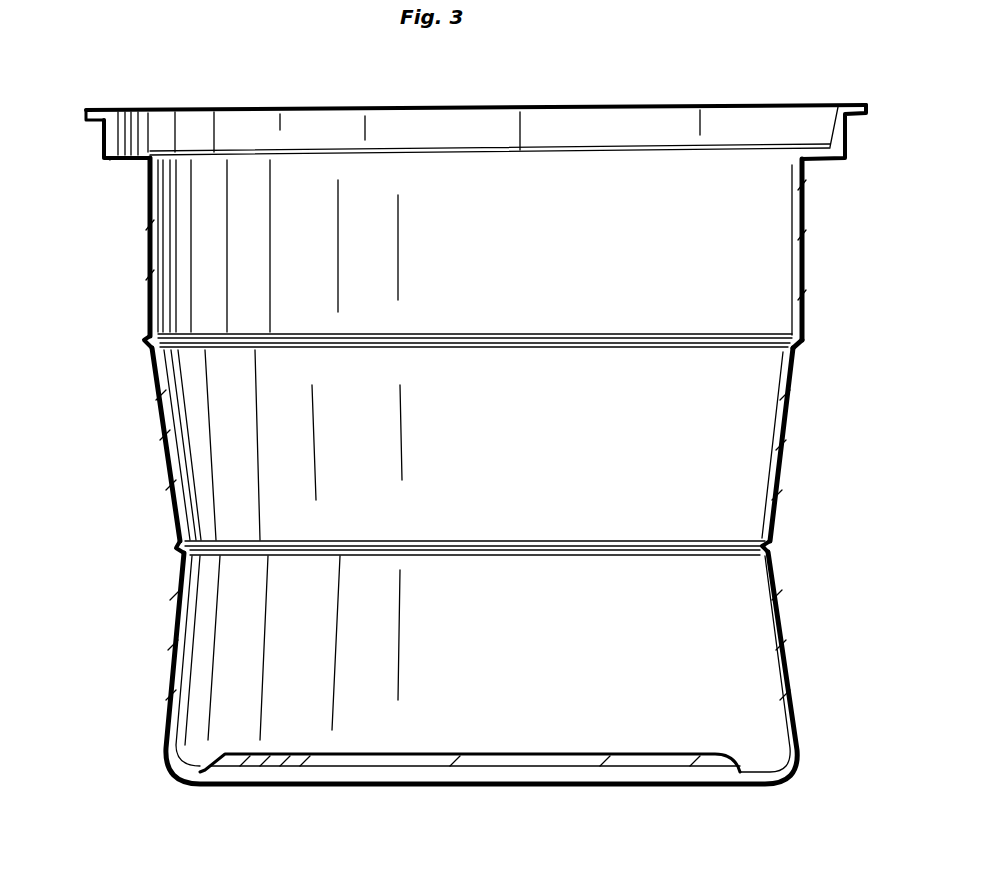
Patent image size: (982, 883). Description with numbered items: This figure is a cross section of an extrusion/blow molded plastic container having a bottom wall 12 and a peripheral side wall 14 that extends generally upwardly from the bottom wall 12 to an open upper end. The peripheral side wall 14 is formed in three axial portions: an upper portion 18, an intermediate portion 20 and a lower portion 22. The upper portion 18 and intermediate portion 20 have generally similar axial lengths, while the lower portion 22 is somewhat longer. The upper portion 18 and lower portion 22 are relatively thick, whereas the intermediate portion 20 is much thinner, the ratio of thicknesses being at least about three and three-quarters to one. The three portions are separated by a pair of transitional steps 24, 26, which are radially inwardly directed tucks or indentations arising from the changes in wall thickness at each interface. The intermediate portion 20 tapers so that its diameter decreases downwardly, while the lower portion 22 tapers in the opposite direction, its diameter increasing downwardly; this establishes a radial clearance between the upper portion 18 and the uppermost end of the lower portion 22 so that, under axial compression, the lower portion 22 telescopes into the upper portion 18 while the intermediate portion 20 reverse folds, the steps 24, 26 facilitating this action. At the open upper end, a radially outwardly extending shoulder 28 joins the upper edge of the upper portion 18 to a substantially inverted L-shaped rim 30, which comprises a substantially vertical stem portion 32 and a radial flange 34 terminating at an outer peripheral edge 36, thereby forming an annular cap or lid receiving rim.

The bottom wall 12 is at (318, 760).
The peripheral side wall 14 is at (785, 465).
The upper portion 18 is at (147, 245).
The intermediate portion 20 is at (160, 435).
The lower portion 22 is at (172, 628).
The transitional step 24 is at (148, 340).
The transitional step 26 is at (178, 548).
The shoulder 28 is at (132, 160).
The rim 30 is at (98, 156).
The stem portion 32 is at (108, 133).
The radial flange 34 is at (103, 108).
The outer peripheral edge 36 is at (86, 114).